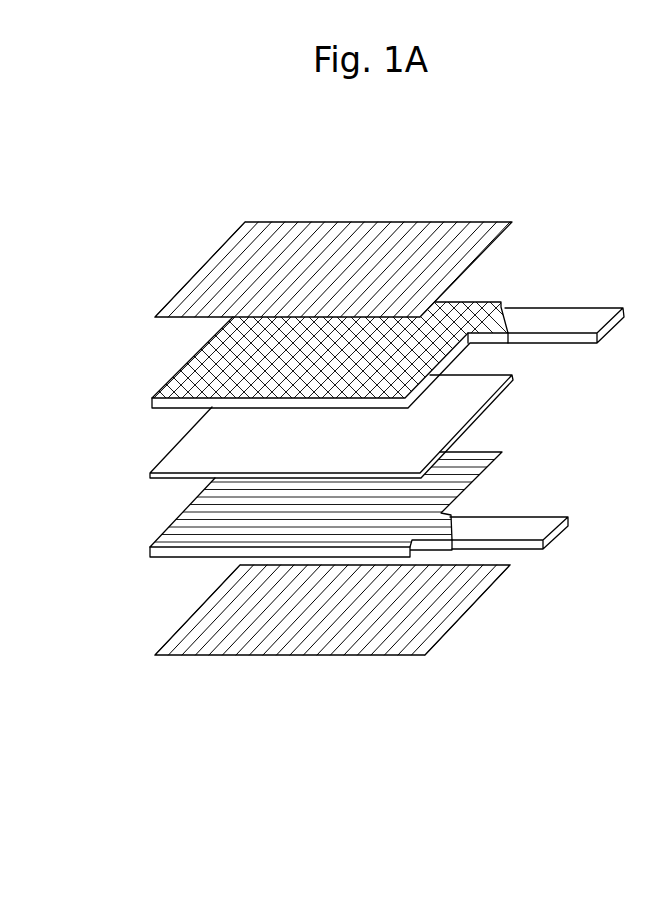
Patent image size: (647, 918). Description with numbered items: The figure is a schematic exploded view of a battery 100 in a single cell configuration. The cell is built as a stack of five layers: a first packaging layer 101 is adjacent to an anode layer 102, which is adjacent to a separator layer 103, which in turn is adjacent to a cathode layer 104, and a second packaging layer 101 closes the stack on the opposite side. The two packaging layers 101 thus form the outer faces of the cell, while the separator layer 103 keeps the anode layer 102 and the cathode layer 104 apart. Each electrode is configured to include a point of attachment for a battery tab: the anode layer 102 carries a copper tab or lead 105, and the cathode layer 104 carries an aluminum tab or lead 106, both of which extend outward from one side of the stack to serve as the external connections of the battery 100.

The battery 100 is at (251, 192).
The packaging layer 101 is at (212, 255).
The anode layer 102 is at (188, 380).
The separator layer 103 is at (185, 460).
The cathode layer 104 is at (187, 533).
The copper tab or lead 105 is at (533, 320).
The aluminum tab or lead 106 is at (538, 523).